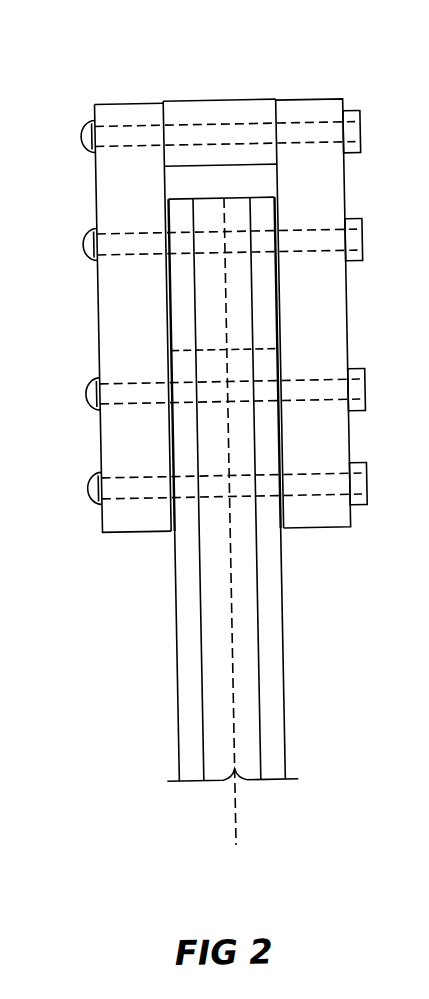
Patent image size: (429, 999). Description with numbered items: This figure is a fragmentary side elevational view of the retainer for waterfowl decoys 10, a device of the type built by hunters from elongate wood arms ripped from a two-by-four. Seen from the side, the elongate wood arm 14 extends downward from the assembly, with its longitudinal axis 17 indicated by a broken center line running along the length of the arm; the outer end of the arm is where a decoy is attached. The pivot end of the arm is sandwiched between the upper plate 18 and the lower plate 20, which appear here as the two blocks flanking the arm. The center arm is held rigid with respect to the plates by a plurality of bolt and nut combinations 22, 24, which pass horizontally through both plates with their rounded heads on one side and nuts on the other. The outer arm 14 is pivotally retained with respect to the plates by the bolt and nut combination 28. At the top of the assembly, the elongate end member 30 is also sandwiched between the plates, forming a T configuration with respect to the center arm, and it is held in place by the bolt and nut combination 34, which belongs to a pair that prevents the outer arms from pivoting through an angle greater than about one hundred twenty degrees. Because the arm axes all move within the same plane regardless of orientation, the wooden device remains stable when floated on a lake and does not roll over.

The retainer for waterfowl decoys 10 is at (212, 430).
The elongate wood arm 14 is at (280, 684).
The longitudinal axis 17 is at (226, 568).
The upper plate 18 is at (113, 103).
The lower plate 20 is at (289, 101).
The bolt and nut combination 22 is at (134, 401).
The bolt and nut combination 24 is at (146, 495).
The bolt and nut combination 28 is at (136, 253).
The elongate end member 30 is at (229, 100).
The bolt and nut combination 34 is at (184, 124).